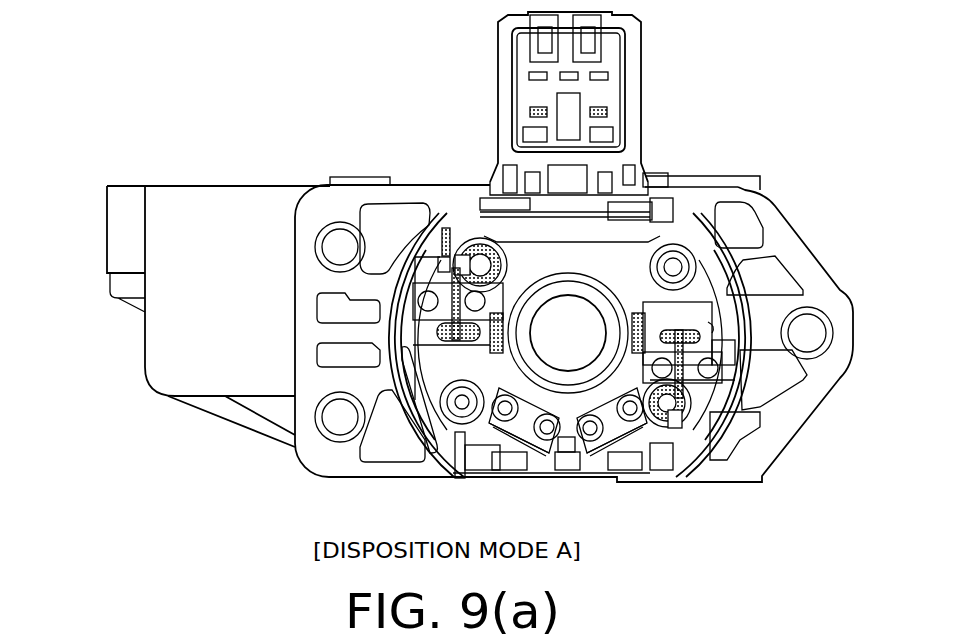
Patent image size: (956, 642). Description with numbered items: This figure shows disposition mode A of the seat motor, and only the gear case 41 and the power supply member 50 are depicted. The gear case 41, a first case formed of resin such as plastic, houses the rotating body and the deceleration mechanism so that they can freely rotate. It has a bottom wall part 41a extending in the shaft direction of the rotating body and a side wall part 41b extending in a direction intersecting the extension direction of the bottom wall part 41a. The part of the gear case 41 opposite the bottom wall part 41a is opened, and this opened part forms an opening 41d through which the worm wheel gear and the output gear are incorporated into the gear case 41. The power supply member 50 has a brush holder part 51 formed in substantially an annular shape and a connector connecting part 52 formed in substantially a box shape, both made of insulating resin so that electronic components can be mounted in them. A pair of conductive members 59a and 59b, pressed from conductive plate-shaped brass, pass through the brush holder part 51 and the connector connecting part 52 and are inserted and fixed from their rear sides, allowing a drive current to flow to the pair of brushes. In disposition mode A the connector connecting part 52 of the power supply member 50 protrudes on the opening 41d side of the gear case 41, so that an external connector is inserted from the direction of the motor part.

The gear case 41 is at (143, 340).
The bottom wall part 41a is at (220, 427).
The side wall part 41b is at (210, 277).
The opening 41d is at (230, 168).
The power supply member 50 is at (646, 182).
The brush holder part 51 is at (695, 422).
The connector connecting part 52 is at (505, 88).
The conductive member 59a is at (600, 108).
The conductive member 59b is at (530, 110).